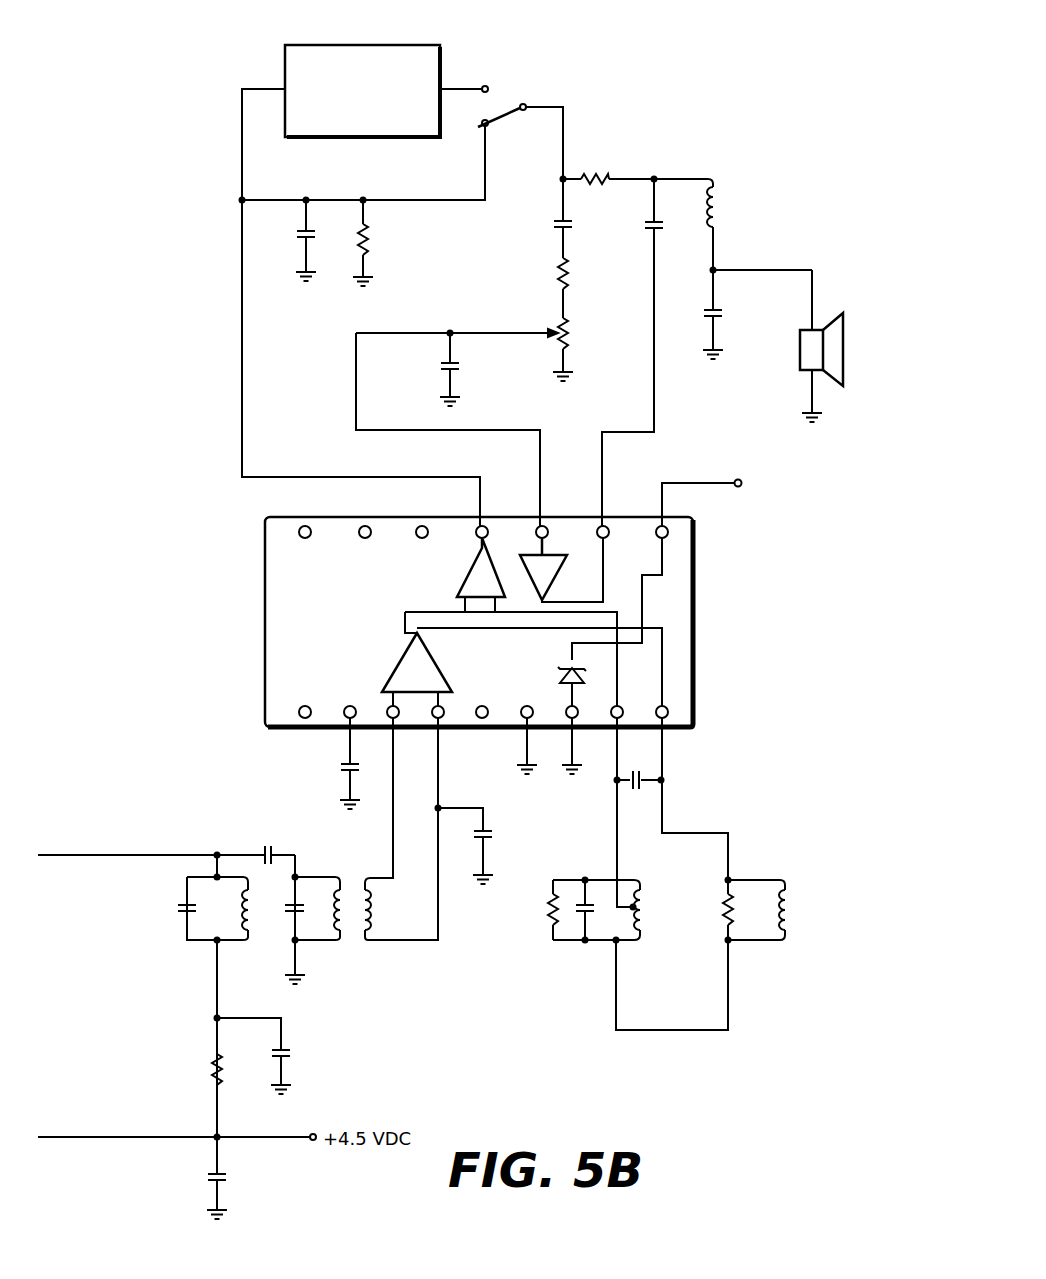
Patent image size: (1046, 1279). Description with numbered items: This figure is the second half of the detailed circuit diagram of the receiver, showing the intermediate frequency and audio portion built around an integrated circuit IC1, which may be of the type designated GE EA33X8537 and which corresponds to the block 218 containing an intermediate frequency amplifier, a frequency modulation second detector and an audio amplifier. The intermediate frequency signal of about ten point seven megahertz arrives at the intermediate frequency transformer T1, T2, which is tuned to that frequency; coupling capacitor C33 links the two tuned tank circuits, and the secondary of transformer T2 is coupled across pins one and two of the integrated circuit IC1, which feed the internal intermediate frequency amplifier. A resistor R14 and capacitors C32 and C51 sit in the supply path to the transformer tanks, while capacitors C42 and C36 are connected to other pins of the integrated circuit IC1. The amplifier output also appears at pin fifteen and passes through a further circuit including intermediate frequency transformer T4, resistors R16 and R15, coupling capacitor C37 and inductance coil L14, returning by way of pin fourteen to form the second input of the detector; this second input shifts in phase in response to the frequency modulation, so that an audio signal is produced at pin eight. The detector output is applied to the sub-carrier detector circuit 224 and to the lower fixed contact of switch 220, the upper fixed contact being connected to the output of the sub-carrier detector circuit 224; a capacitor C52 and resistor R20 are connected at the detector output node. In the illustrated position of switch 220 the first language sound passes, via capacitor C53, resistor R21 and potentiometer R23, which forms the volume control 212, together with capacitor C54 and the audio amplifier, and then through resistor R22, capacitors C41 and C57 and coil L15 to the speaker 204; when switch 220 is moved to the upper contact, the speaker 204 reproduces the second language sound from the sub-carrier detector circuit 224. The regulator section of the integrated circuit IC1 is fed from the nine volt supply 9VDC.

The sub-carrier detector circuit 224 is at (337, 44).
The switch 220 is at (505, 92).
The block 218 is at (685, 587).
The volume control 212 is at (607, 370).
The speaker 204 is at (868, 388).
The integrated circuit IC1 is at (280, 624).
The capacitor C52 is at (297, 244).
The resistor R20 is at (370, 236).
The resistor R22 is at (607, 174).
The inductor L15 is at (724, 204).
The capacitor C53 is at (552, 236).
The capacitor C41 is at (648, 236).
The resistor R21 is at (556, 272).
The potentiometer R23 is at (565, 336).
The capacitor C57 is at (722, 310).
The capacitor C54 is at (438, 370).
The 9 volt DC supply 9VDC is at (734, 499).
The capacitor C42 is at (342, 765).
The capacitor C36 is at (488, 832).
The capacitor C37 is at (650, 774).
The capacitor C33 is at (263, 850).
The intermediate frequency transformer T1 is at (255, 935).
The intermediate frequency transformer T2 is at (356, 884).
The intermediate frequency transformer T4 is at (646, 896).
The resistor R16 is at (548, 918).
The resistor R15 is at (705, 910).
The inductance coil L14 is at (792, 912).
The resistor R14 is at (212, 1070).
The capacitor C32 is at (288, 1052).
The capacitor C51 is at (228, 1176).